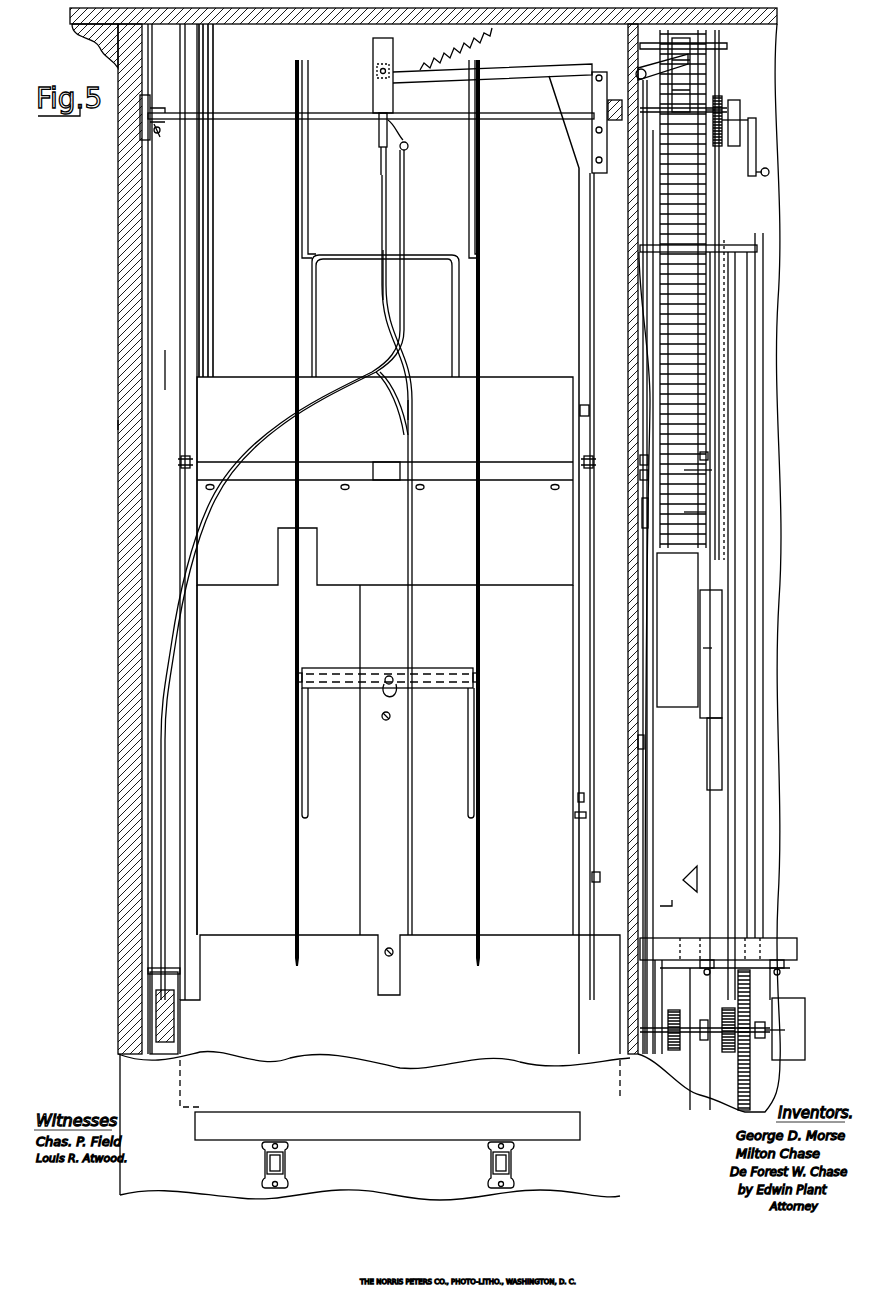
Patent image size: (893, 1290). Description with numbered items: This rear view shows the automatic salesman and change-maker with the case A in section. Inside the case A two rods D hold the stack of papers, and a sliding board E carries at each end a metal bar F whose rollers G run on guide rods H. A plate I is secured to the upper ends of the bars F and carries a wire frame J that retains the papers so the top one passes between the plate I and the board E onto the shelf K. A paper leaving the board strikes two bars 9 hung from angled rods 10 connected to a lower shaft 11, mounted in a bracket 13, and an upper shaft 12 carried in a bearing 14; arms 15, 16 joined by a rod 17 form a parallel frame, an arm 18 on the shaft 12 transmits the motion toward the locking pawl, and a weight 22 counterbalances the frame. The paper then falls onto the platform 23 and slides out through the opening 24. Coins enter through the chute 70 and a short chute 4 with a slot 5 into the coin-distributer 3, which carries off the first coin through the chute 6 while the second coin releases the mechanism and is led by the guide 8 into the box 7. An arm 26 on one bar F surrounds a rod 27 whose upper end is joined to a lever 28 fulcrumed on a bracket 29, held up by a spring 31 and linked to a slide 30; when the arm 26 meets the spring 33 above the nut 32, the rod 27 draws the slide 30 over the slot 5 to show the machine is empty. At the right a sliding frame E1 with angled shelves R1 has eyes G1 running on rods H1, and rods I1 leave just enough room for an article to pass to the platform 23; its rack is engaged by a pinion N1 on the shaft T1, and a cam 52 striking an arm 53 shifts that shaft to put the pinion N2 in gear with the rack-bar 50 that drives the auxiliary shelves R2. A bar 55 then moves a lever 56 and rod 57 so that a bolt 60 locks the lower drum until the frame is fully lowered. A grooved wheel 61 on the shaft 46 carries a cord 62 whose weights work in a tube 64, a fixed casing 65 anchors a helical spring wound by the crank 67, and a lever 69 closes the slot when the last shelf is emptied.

The bearing 14 is at (153, 100).
The arm 18 is at (156, 136).
The slide 30 is at (373, 66).
The spring 31 is at (430, 60).
The lever 28 is at (490, 80).
The bracket 29 is at (602, 96).
The shaft 46 is at (733, 124).
The crank 67 is at (752, 160).
The arm 16 is at (408, 140).
The slot or opening 5 is at (380, 157).
The short chute 4 is at (381, 186).
The coin-distributer 3 is at (382, 282).
The rod 17 is at (413, 400).
The rods 10 is at (300, 198).
The upper shaft 12 is at (500, 120).
The rod 27 is at (560, 142).
The grooved wheel 61 is at (720, 150).
The fixed casing 65 is at (640, 214).
The bars 9 is at (295, 322).
The chute 6 is at (398, 420).
The arm 26 is at (589, 406).
The lever 69 is at (640, 474).
The bolt 60 is at (640, 502).
The chute 70 is at (684, 418).
The cord 62 is at (721, 356).
The rack-bar 50 is at (728, 504).
The tube 64 is at (712, 680).
The bracket 13 is at (336, 668).
The lower rod or shaft 11 is at (480, 677).
The arm 15 is at (398, 696).
The spiral spring 33 is at (576, 799).
The nut 32 is at (562, 822).
The rod 57 is at (643, 722).
The lever 56 is at (640, 790).
The cam 52 is at (695, 868).
The bar 55 is at (672, 898).
The arm 53 is at (704, 1020).
The platform or conduit 23 is at (439, 803).
The opening 24 is at (387, 1126).
The guide 8 is at (150, 1012).
The box or receptacle 7 is at (176, 370).
The case A is at (118, 426).
The rods or bars D is at (207, 290).
The guide rods or bars H is at (180, 296).
The metal bar F is at (186, 422).
The rollers or wheels G is at (185, 460).
The plate I is at (385, 481).
The shelf K is at (401, 732).
The sliding board E is at (357, 760).
The wire frame J is at (318, 257).
The rods I1 is at (700, 212).
The rods H1 is at (712, 280).
The shelves R2 is at (700, 352).
The eyes G1 is at (708, 455).
The sliding frame E1 is at (690, 480).
The shelves R1 is at (690, 516).
The shaft T1 is at (718, 1024).
The pinion N1 is at (691, 1036).
The pinion N2 is at (731, 1040).
The weight 22 is at (805, 1052).